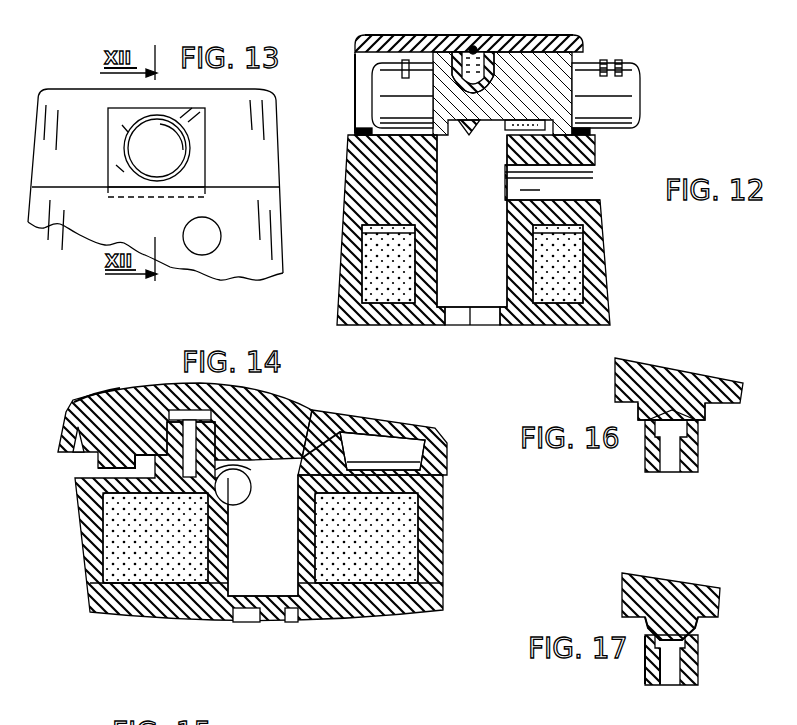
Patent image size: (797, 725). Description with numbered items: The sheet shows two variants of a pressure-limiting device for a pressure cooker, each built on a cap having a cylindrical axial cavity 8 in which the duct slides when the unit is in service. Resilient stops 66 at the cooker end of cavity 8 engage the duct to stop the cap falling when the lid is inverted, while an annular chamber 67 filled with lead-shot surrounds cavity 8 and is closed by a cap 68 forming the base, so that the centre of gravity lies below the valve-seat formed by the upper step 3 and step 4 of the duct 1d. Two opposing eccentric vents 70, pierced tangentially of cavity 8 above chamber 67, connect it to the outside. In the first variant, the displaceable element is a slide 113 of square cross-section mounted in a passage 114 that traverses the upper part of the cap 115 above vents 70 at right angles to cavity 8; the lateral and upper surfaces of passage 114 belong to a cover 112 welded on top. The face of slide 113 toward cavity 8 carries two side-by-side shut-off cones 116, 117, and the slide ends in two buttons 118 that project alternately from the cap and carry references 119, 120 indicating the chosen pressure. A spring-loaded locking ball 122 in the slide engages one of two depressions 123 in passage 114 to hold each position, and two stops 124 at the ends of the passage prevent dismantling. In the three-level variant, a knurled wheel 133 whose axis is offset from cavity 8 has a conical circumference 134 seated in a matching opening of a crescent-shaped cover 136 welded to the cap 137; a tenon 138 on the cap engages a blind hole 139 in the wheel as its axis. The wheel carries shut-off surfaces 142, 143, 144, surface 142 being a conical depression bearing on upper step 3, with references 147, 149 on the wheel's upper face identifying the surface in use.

In FIG. 16, the duct 1d is at (700, 458).
In FIG. 17, the duct 1d is at (700, 670).
In FIG. 17, the upper step 3 is at (650, 650).
In FIG. 17, the step 4 is at (656, 668).
In FIG. 12, the axial cavity 8 is at (480, 253).
In FIG. 14, the axial cavity 8 is at (274, 583).
In FIG. 12, the resilient stops 66 is at (462, 326).
In FIG. 14, the resilient stops 66 is at (246, 622).
In FIG. 12, the annular chamber 67 is at (372, 256).
In FIG. 14, the annular chamber 67 is at (385, 552).
In FIG. 14, the cap (base) 68 is at (333, 600).
In FIG. 13, the eccentric vents 70 is at (206, 253).
In FIG. 12, the eccentric vents 70 is at (595, 186).
In FIG. 14, the eccentric vents 70 is at (234, 503).
In FIG. 13, the cover 112 is at (252, 168).
In FIG. 12, the cover 112 is at (580, 46).
In FIG. 13, the slide 113 is at (178, 118).
In FIG. 13, the passage 114 is at (128, 140).
In FIG. 12, the passage 114 is at (362, 76).
In FIG. 13, the cap 115 is at (86, 226).
In FIG. 12, the shut-off cone 116 is at (498, 134).
In FIG. 12, the shut-off cone 117 is at (455, 138).
In FIG. 13, the buttons 118 is at (170, 159).
In FIG. 12, the buttons 118 is at (392, 104).
In FIG. 12, the reference 119 is at (402, 70).
In FIG. 12, the reference 120 is at (612, 62).
In FIG. 12, the spring-loaded locking ball 122 is at (475, 48).
In FIG. 12, the depressions 123 is at (372, 35).
In FIG. 12, the stops 124 is at (362, 137).
In FIG. 14, the knurled wheel 133 is at (262, 406).
In FIG. 16, the knurled wheel 133 is at (690, 388).
In FIG. 17, the knurled wheel 133 is at (672, 588).
In FIG. 14, the conical circumference 134 is at (66, 442).
In FIG. 14, the crescent-shaped cover 136 is at (410, 428).
In FIG. 14, the cap 137 is at (444, 518).
In FIG. 14, the tenon 138 is at (248, 466).
In FIG. 14, the blind hole 139 is at (243, 480).
In FIG. 14, the shut-off surface 142 is at (318, 414).
In FIG. 16, the shut-off surface 142 is at (705, 414).
In FIG. 17, the shut-off surface 143 is at (700, 628).
In FIG. 14, the shut-off surface 144 is at (100, 467).
In FIG. 14, the reference 147 is at (302, 410).
In FIG. 14, the reference 149 is at (82, 410).